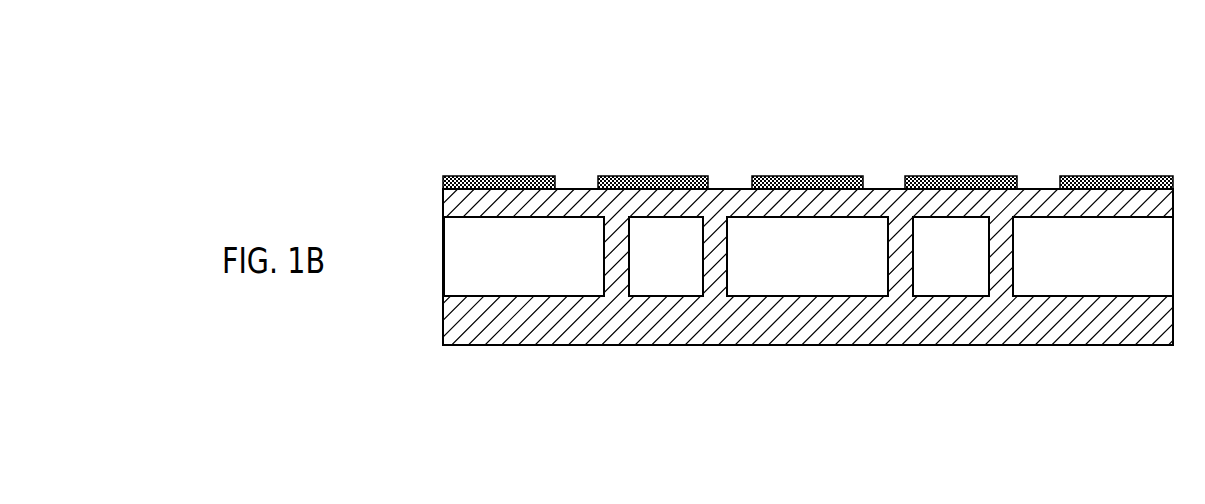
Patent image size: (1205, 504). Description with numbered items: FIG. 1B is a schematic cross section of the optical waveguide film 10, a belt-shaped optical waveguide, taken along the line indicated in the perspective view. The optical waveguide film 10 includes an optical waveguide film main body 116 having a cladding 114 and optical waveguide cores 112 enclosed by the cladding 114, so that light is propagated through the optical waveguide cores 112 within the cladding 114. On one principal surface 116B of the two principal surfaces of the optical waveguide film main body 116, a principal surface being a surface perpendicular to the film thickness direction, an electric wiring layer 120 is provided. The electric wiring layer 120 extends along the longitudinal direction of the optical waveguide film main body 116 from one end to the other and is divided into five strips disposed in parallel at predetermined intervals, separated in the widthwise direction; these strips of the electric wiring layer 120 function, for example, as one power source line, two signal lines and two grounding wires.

The optical waveguide film 10 is at (808, 187).
The optical waveguide core 112 is at (680, 232).
The cladding 114 is at (731, 197).
The optical waveguide film main body 116 is at (808, 162).
The principal surface 116B is at (573, 187).
The electric wiring layer 120 is at (500, 175).